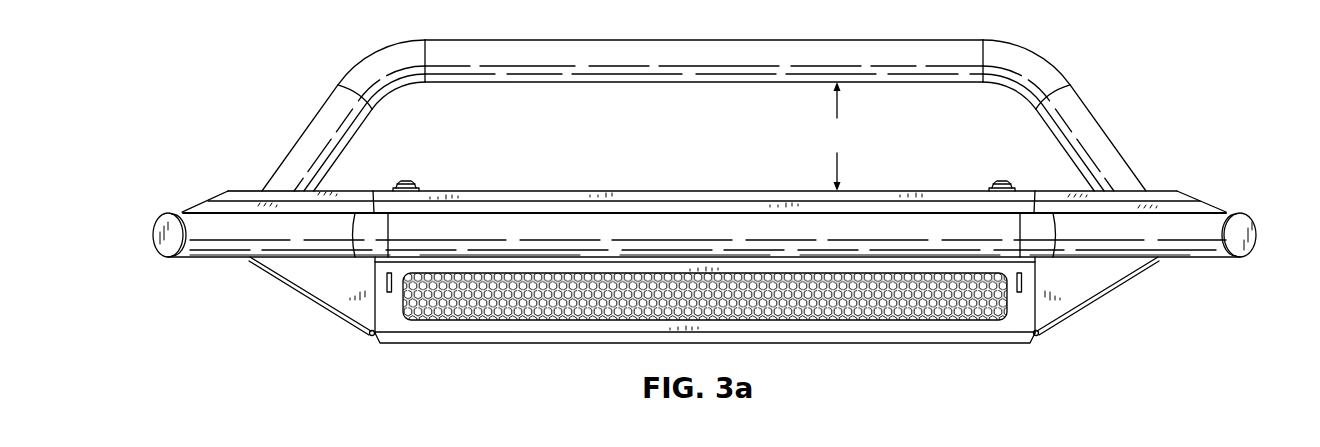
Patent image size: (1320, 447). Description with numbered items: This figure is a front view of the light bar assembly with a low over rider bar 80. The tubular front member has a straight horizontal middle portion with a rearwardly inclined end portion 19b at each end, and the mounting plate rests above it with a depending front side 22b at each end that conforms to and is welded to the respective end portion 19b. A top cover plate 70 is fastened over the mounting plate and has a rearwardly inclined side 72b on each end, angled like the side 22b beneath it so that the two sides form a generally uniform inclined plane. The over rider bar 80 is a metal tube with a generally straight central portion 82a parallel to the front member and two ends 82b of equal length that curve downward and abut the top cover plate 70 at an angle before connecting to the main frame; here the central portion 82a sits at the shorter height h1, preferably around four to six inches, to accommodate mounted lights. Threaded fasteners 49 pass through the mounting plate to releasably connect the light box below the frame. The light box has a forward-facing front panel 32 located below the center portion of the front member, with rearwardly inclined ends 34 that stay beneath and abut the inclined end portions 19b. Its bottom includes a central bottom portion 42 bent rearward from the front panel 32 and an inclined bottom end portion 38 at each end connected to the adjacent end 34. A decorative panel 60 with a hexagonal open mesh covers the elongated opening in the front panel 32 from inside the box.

The rearwardly inclined end portion 19b is at (239, 247).
The depending front side 22b is at (224, 205).
The rearwardly inclined side 72b is at (254, 192).
The end of over rider bar 82b is at (362, 121).
The central portion of over rider bar 82a is at (563, 86).
The over rider bar 80 is at (704, 115).
The top cover plate 70 is at (630, 187).
The threaded fastener 49 is at (410, 178).
The shorter height h1 is at (841, 136).
The rearwardly inclined end of front panel 34 is at (333, 292).
The inclined bottom end portion 38 is at (359, 330).
The front panel 32 is at (398, 324).
The central bottom portion 42 is at (473, 340).
The decorative panel 60 is at (562, 318).